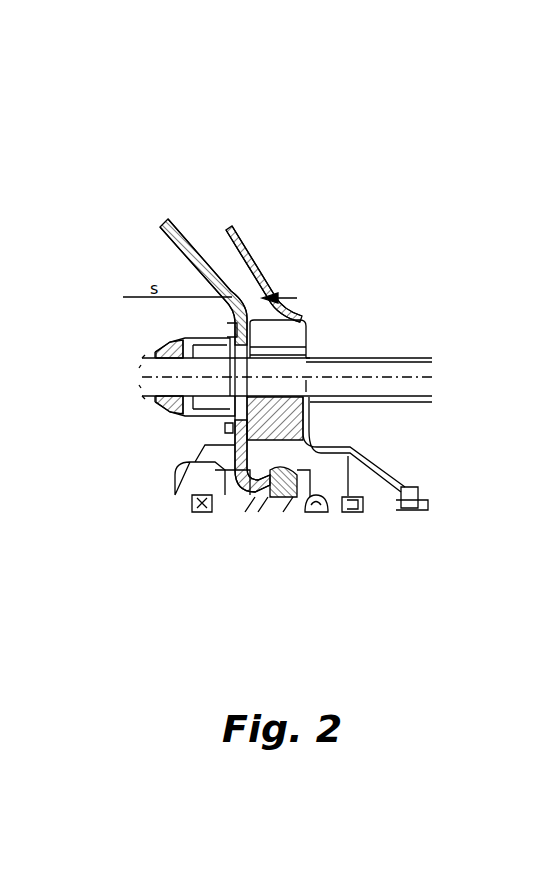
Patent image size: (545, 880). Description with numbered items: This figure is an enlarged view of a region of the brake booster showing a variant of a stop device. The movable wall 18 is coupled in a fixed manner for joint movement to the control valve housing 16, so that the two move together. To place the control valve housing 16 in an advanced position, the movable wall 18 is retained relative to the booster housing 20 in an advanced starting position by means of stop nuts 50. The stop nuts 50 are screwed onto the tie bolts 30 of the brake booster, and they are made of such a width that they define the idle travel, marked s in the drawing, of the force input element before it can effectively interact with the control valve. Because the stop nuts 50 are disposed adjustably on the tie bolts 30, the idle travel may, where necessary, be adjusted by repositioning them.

The control valve housing 16 is at (235, 510).
The movable wall 18 is at (178, 232).
The booster housing 20 is at (246, 250).
The tie bolt 30 is at (383, 358).
The stop nut 50 is at (302, 313).